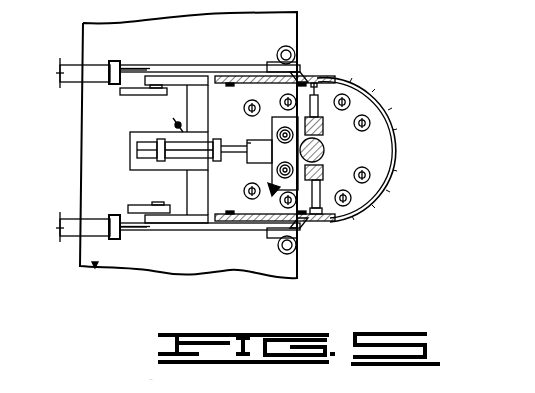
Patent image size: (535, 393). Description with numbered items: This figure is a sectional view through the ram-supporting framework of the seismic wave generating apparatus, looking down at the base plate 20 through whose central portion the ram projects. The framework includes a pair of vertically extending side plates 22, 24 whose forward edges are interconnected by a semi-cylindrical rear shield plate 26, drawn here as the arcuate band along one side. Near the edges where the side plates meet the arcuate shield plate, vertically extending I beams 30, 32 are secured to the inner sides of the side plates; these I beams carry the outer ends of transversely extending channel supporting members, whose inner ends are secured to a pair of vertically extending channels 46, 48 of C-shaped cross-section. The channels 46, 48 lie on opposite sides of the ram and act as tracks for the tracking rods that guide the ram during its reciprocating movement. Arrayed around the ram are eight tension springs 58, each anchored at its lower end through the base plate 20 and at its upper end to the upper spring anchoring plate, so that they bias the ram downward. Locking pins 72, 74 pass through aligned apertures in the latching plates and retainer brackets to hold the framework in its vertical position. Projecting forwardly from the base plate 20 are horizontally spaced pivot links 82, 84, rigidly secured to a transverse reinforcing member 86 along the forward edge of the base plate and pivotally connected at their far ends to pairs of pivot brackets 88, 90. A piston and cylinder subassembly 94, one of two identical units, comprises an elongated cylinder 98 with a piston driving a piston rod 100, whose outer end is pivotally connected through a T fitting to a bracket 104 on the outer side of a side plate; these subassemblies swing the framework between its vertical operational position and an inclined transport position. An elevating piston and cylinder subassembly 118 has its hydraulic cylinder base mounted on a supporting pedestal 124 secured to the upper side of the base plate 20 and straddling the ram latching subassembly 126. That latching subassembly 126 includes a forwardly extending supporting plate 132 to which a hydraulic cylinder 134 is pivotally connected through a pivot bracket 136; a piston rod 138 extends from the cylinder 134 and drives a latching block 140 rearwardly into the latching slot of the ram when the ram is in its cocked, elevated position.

The base plate 20 is at (370, 146).
The side plate 22 is at (236, 240).
The side plate 24 is at (233, 77).
The rear shield plate 26 is at (394, 134).
The I beam 30 is at (359, 206).
The I beam 32 is at (326, 82).
The channel 46 is at (358, 185).
The channel 48 is at (317, 122).
The tension springs 58 is at (372, 117).
The locking pin 72 is at (298, 257).
The locking pin 74 is at (293, 44).
The pivot link 82 is at (182, 229).
The pivot link 84 is at (177, 80).
The transverse reinforcing member 86 is at (200, 183).
The pivot brackets 88 is at (137, 206).
The pivot brackets 90 is at (126, 90).
The piston and cylinder subassembly 94 is at (95, 266).
The cylinder 98 is at (70, 66).
The piston rod 100 is at (136, 66).
The bracket 104 is at (303, 76).
The elevating piston and cylinder subassembly 118 is at (270, 190).
The supporting pedestal 124 is at (271, 117).
The ram latching subassembly 126 is at (178, 123).
The supporting plate 132 is at (136, 150).
The hydraulic cylinder 134 is at (168, 160).
The pivot bracket 136 is at (140, 132).
The piston rod 138 is at (246, 138).
The latching block 140 is at (250, 160).